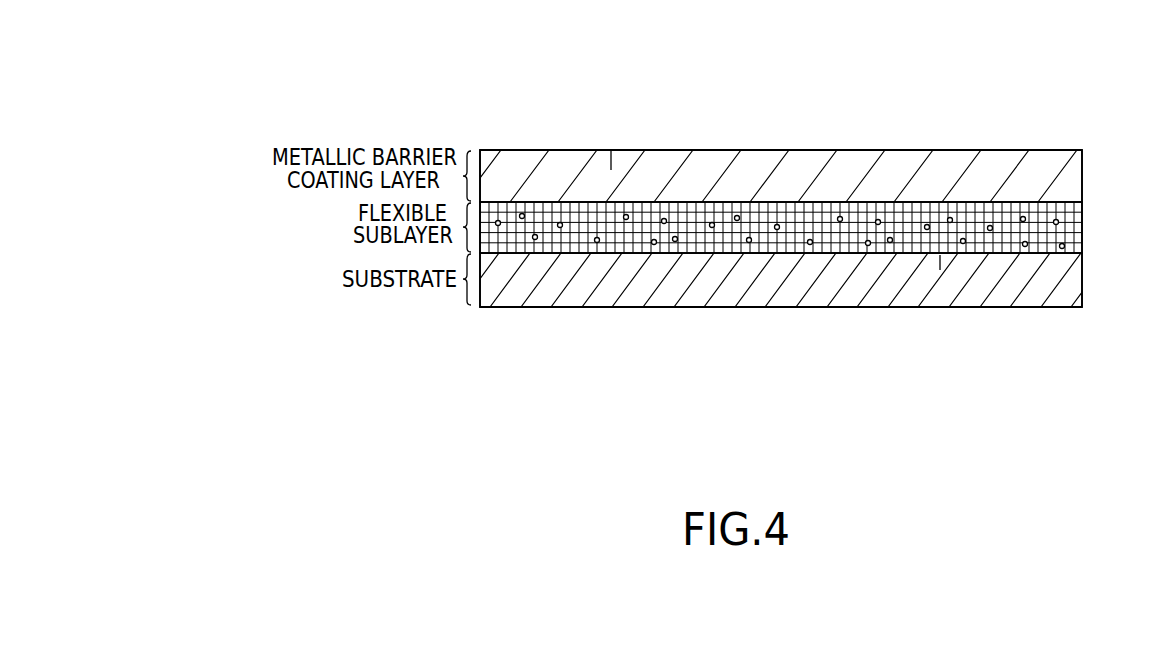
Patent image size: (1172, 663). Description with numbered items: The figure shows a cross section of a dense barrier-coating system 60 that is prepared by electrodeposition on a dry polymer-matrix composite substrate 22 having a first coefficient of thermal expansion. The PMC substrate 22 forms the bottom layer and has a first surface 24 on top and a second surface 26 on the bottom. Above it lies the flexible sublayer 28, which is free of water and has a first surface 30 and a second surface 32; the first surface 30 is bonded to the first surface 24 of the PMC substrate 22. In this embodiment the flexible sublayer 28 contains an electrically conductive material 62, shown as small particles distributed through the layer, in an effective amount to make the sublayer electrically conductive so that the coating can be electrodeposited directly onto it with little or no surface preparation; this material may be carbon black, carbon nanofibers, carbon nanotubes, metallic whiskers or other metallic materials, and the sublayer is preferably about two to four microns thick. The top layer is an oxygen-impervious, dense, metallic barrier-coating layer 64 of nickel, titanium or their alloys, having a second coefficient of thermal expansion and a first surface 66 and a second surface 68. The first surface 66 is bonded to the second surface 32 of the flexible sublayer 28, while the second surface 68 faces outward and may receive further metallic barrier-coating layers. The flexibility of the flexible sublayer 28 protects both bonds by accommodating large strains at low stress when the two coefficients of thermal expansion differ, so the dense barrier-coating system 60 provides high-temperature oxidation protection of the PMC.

The dense barrier-coating system 60 is at (977, 75).
The polymer-matrix composite substrate 22 is at (1075, 292).
The first surface of PMC substrate 24 is at (940, 255).
The second surface of PMC substrate 26 is at (990, 308).
The flexible sublayer 28 is at (1075, 234).
The first surface of flexible sublayer 30 is at (1082, 259).
The second surface of flexible sublayer 32 is at (1082, 205).
The electrically conductive material 62 is at (536, 240).
The oxygen-impervious, dense, metallic barrier-coating layer 64 is at (1075, 188).
The first surface of metallic barrier-coating layer 66 is at (604, 202).
The second surface of metallic barrier-coating layer 68 is at (711, 150).